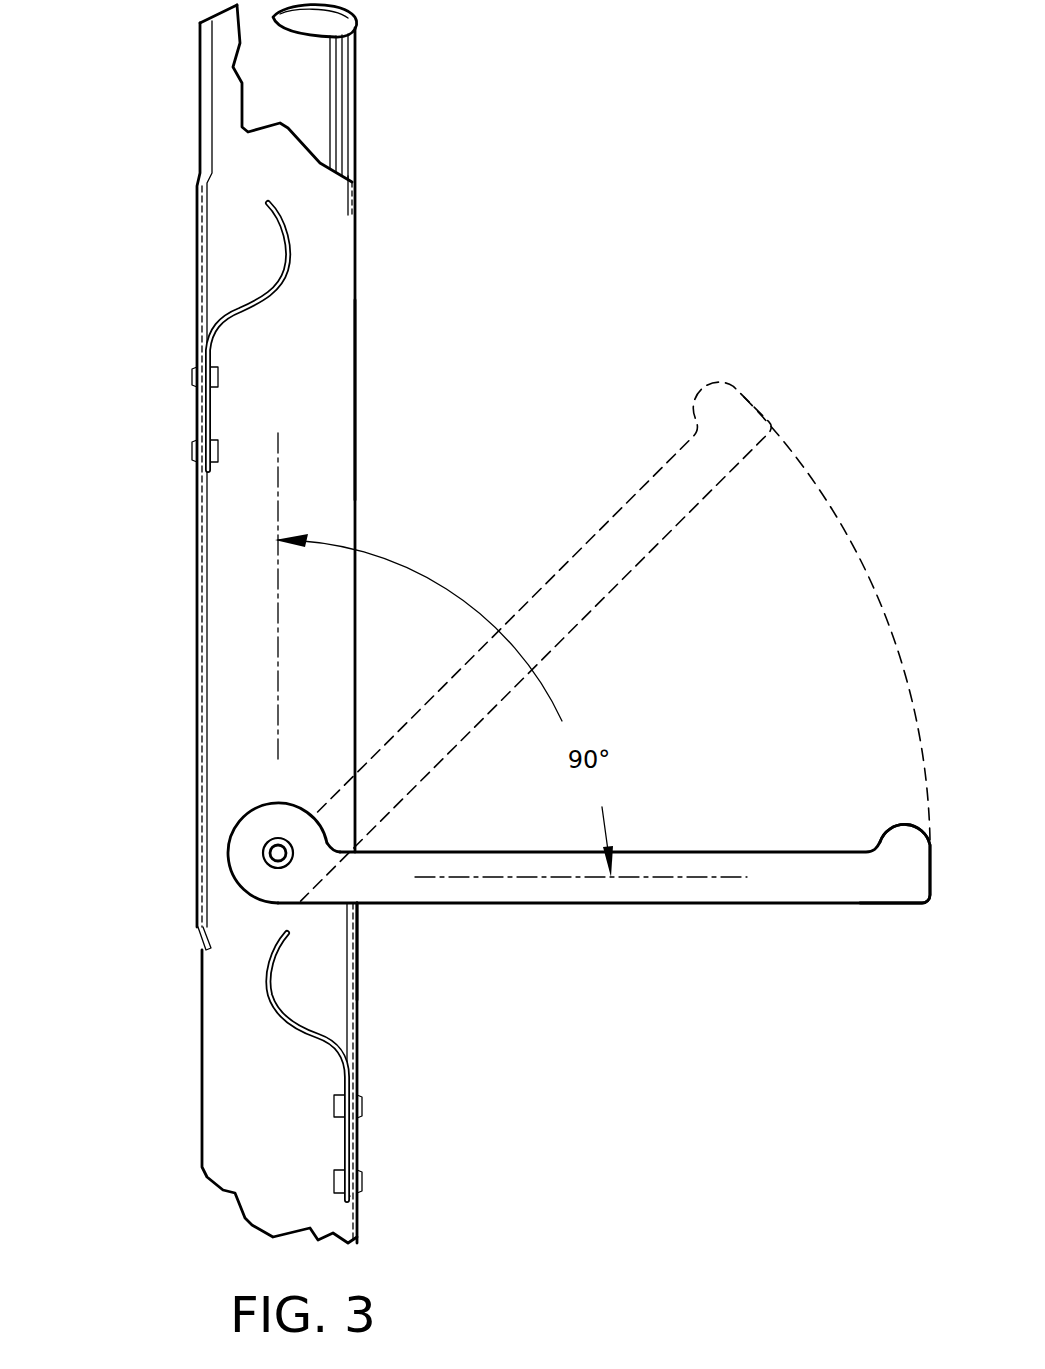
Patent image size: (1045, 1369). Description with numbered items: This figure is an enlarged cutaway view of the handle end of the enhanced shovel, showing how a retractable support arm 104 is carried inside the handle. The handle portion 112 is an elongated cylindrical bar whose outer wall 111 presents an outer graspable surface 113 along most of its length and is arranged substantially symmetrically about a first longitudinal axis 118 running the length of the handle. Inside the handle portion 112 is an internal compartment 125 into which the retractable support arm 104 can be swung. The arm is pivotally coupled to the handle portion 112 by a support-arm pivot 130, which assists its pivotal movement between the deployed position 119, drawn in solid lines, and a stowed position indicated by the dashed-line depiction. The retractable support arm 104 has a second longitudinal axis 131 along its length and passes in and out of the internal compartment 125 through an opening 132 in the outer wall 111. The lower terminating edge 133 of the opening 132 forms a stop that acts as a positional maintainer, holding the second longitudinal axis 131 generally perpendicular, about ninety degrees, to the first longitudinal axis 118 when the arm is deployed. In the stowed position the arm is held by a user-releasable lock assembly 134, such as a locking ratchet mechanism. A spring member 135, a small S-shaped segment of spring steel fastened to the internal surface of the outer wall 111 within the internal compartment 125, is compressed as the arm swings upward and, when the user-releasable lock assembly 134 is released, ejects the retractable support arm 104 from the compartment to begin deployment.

The retractable support arm 104 is at (683, 903).
The outer wall 111 is at (357, 207).
The handle portion 112 is at (160, 87).
The outer graspable surface 113 is at (315, 80).
The first longitudinal axis 118 is at (278, 481).
The deployed position 119 is at (878, 940).
The internal compartment 125 is at (311, 658).
The support-arm pivot 130 is at (263, 853).
The second longitudinal axis 131 is at (648, 877).
The opening 132 is at (403, 360).
The lower terminating edge 133 is at (355, 907).
The user-releasable lock assembly 134 is at (222, 766).
The spring member 135 is at (288, 267).